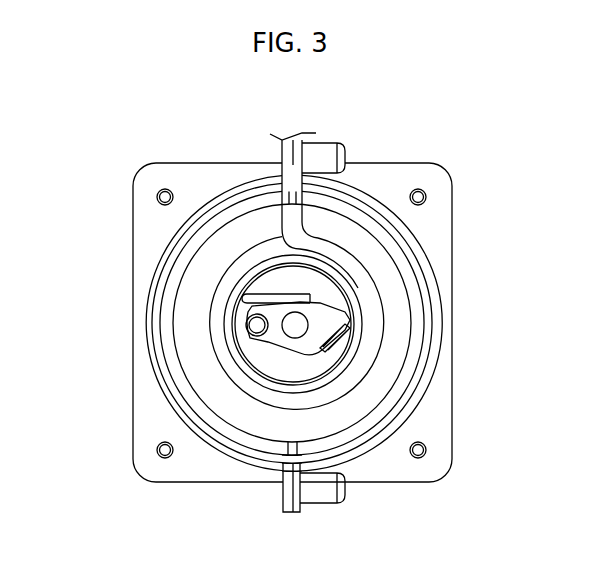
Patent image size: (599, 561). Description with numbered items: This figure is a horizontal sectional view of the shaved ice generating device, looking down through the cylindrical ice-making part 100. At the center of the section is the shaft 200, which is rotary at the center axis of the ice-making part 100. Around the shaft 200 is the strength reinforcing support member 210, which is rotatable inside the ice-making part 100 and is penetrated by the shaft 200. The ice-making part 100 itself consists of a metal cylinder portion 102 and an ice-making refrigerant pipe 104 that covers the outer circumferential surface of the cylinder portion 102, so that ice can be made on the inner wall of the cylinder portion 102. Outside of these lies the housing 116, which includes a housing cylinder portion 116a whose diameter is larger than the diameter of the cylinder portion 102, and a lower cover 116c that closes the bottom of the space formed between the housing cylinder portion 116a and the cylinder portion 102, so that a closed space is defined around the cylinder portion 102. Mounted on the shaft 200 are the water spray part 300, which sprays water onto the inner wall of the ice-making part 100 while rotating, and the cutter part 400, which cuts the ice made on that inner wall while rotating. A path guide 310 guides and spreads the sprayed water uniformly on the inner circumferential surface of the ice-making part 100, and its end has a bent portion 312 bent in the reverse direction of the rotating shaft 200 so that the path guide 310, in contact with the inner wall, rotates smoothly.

The ice-making part 100 is at (492, 121).
The cylinder portion 102 is at (354, 293).
The ice-making refrigerant pipe 104 is at (351, 267).
The housing 116 is at (357, 207).
The housing cylinder portion 116a is at (396, 413).
The lower cover 116c is at (385, 387).
The shaft 200 is at (292, 312).
The strength reinforcing support member 210 is at (338, 312).
The water spray part 300 is at (247, 333).
The path guide 310 is at (252, 296).
The bent portion 312 is at (246, 320).
The cutter part 400 is at (352, 336).